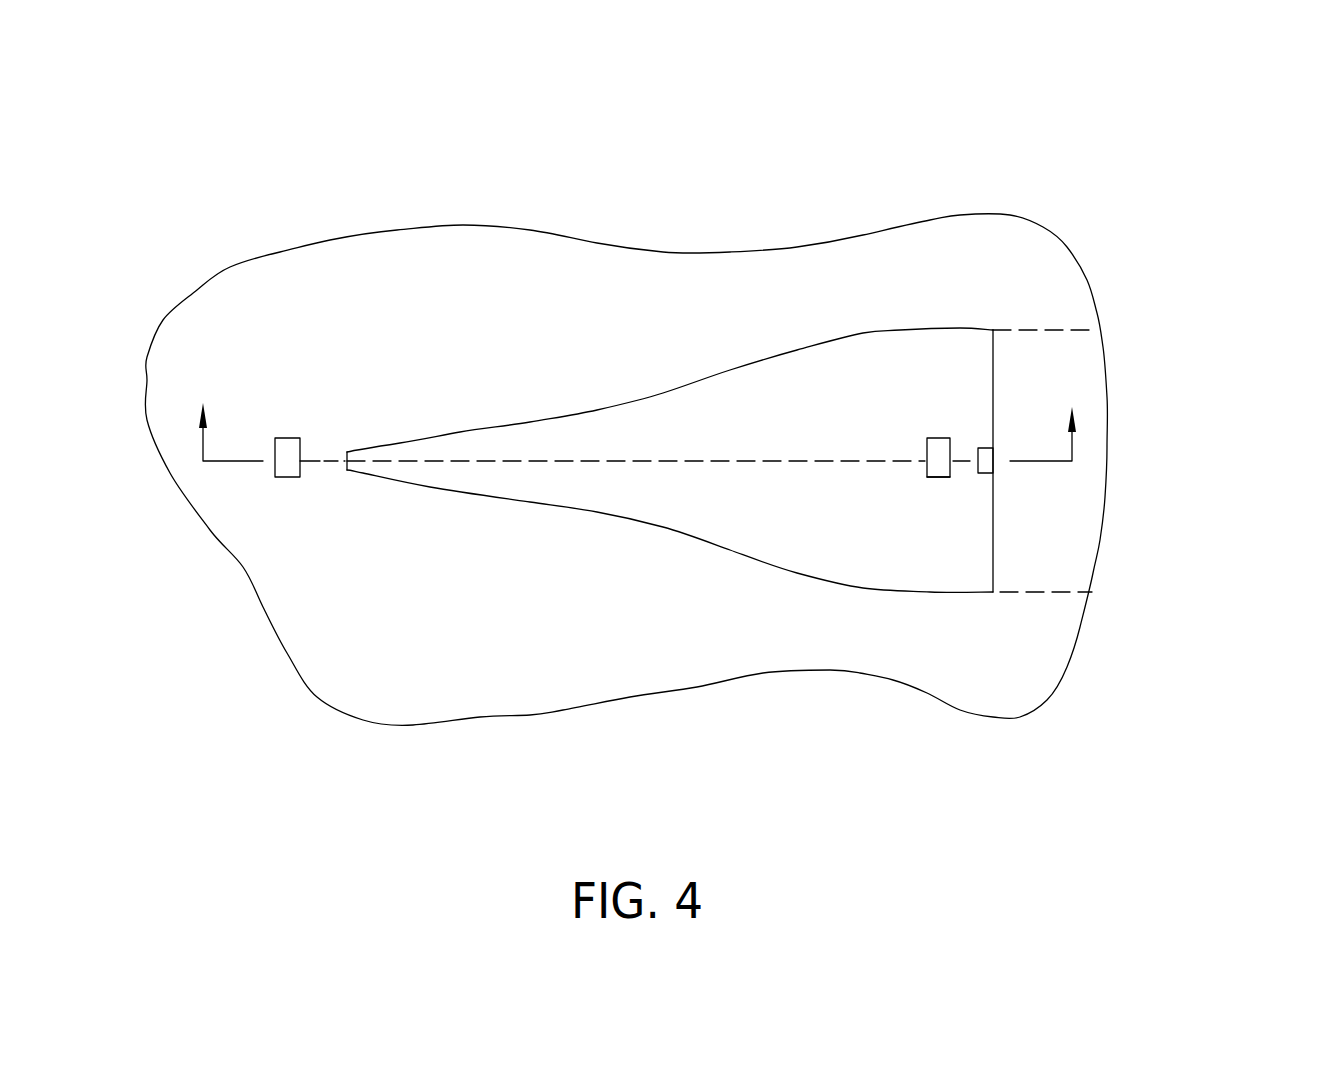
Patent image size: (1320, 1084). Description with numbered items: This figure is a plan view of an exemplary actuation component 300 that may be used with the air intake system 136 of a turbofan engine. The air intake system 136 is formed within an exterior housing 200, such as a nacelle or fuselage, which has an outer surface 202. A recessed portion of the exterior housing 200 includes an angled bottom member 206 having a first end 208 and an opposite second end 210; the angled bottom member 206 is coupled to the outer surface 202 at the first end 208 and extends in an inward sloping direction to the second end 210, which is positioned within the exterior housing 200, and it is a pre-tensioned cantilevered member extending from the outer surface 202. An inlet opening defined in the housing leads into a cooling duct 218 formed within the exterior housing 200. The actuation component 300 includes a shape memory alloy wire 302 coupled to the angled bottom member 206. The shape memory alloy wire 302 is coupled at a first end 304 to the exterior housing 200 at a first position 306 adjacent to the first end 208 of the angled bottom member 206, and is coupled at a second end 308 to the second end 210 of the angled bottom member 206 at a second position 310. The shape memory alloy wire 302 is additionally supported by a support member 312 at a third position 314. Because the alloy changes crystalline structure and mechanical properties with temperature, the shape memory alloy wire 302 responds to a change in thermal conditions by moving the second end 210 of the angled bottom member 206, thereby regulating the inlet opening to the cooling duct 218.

The actuation component 300 is at (703, 422).
The air intake system 136 is at (1073, 158).
The exterior housing 200 is at (703, 468).
The outer surface 202 is at (1000, 257).
The angled bottom member 206 is at (993, 330).
The first end 208 is at (347, 470).
The second end 210 is at (1000, 563).
The cooling duct 218 is at (1018, 545).
The shape memory alloy wire 302 is at (677, 460).
The first end 304 is at (320, 457).
The first position 306 is at (290, 437).
The second end 308 is at (967, 457).
The second position 310 is at (990, 468).
The support member 312 is at (920, 453).
The third position 314 is at (923, 483).